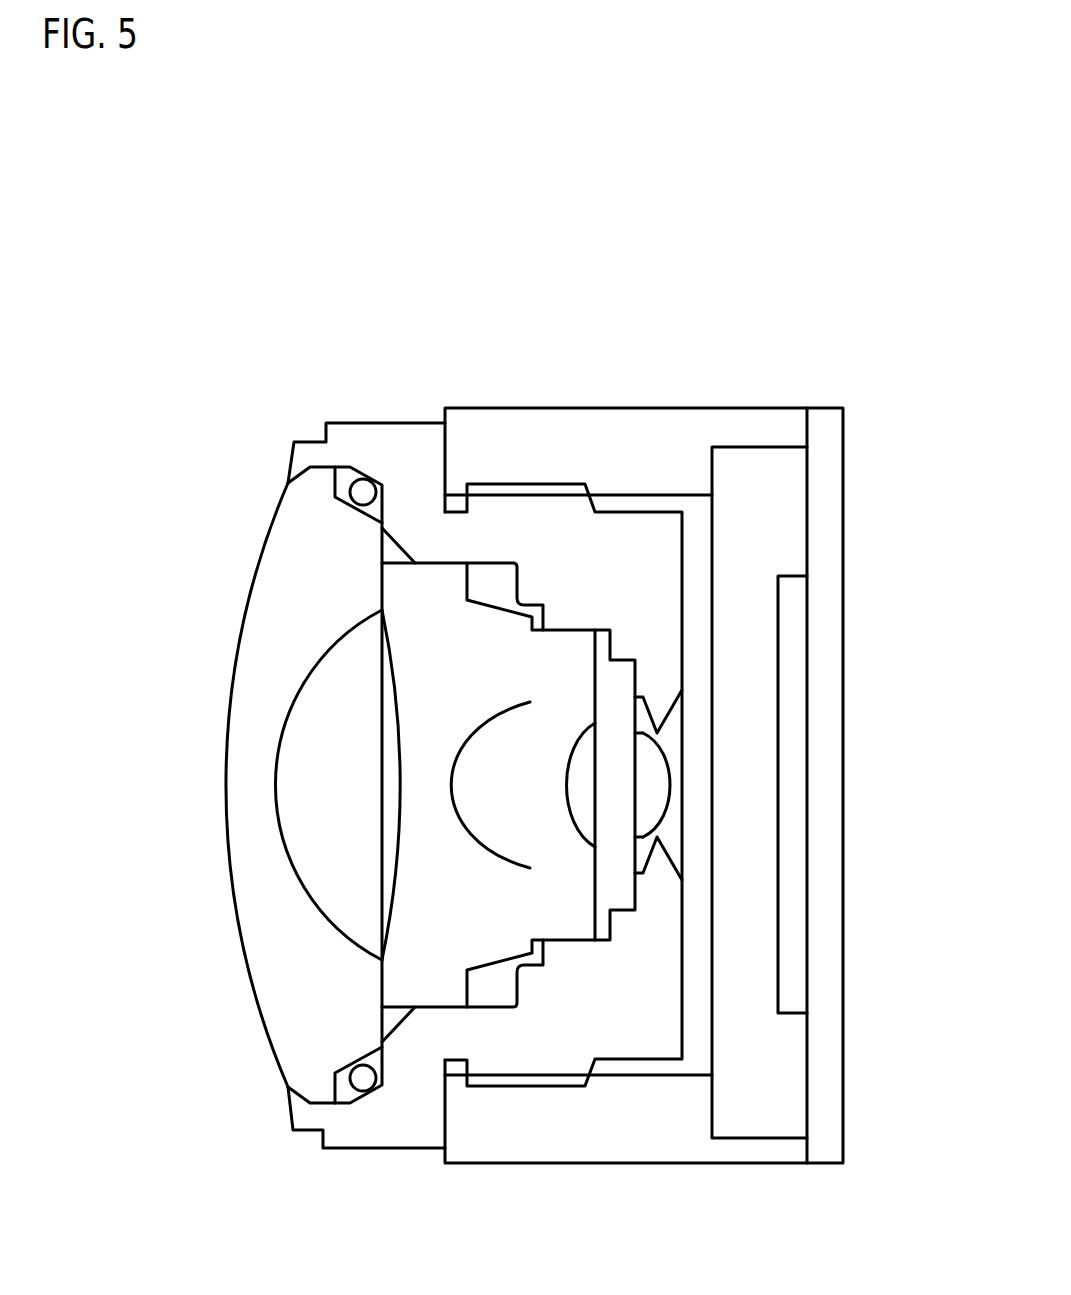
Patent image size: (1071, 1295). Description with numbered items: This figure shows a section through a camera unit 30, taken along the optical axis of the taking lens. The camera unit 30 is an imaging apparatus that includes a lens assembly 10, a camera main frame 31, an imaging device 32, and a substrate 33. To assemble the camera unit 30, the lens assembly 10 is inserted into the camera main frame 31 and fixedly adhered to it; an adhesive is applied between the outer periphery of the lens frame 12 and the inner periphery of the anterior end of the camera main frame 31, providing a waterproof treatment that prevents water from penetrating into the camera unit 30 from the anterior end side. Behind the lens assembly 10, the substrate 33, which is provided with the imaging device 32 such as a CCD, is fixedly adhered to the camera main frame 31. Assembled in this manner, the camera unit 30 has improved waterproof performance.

The lens assembly 10 is at (195, 507).
The lens frame 12 is at (382, 445).
The camera unit 30 is at (600, 216).
The camera main frame 31 is at (563, 430).
The imaging device 32 is at (793, 660).
The substrate 33 is at (827, 747).